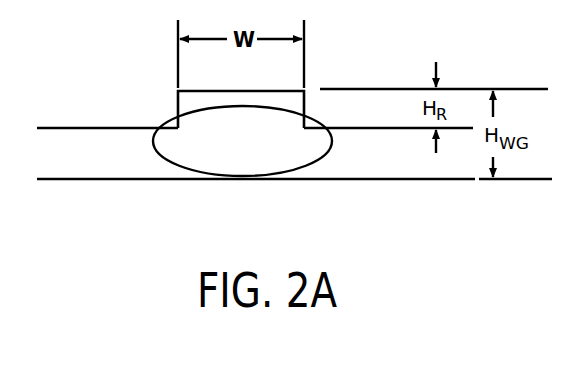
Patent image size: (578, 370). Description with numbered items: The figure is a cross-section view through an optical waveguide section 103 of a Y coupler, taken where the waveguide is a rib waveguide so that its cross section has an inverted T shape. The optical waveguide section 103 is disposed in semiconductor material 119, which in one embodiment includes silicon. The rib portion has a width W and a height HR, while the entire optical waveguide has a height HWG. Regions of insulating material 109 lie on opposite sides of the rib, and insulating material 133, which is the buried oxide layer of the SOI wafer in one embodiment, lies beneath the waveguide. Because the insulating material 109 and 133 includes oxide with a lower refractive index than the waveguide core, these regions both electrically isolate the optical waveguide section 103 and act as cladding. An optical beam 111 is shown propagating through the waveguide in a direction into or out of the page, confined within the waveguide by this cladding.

The optical waveguide section 103 is at (231, 89).
The insulating material 109 is at (101, 121).
The optical beam 111 is at (306, 172).
The semiconductor material 119 is at (286, 116).
The insulating material 133 is at (256, 208).